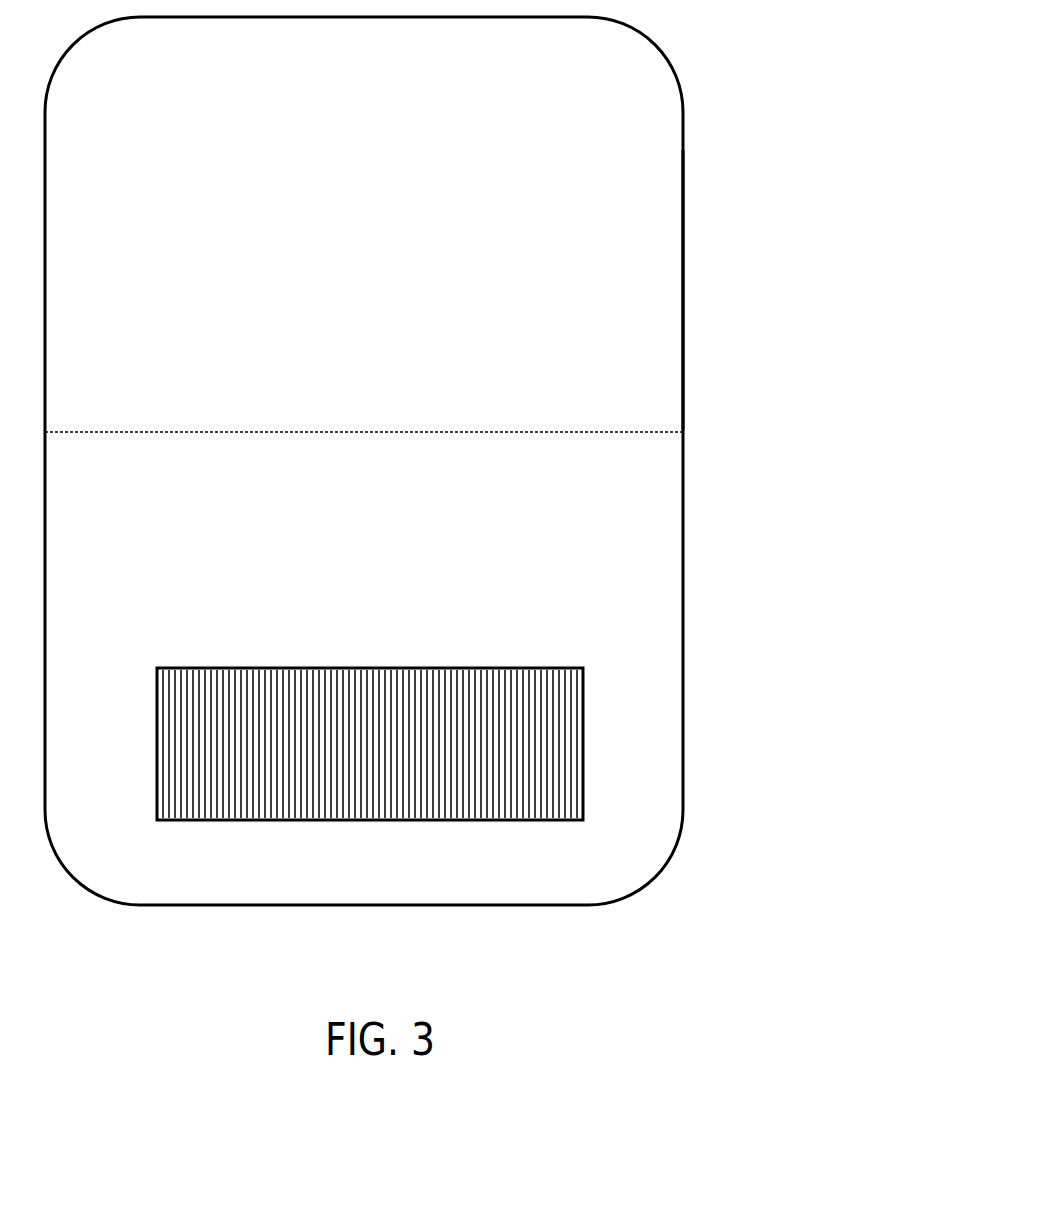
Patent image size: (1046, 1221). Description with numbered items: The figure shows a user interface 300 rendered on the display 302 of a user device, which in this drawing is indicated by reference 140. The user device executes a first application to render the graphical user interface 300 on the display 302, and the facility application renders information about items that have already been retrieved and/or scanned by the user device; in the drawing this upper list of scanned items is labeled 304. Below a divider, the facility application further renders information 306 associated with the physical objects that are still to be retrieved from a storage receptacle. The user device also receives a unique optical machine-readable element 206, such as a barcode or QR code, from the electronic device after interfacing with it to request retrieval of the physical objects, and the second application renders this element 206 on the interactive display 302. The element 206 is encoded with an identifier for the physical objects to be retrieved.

The mobile device 140 is at (785, 157).
The display 302 is at (683, 293).
The user interface 300 is at (655, 357).
The scanned items list 304 is at (335, 107).
The information 306 is at (583, 463).
The optical machine-readable element 206 is at (585, 745).